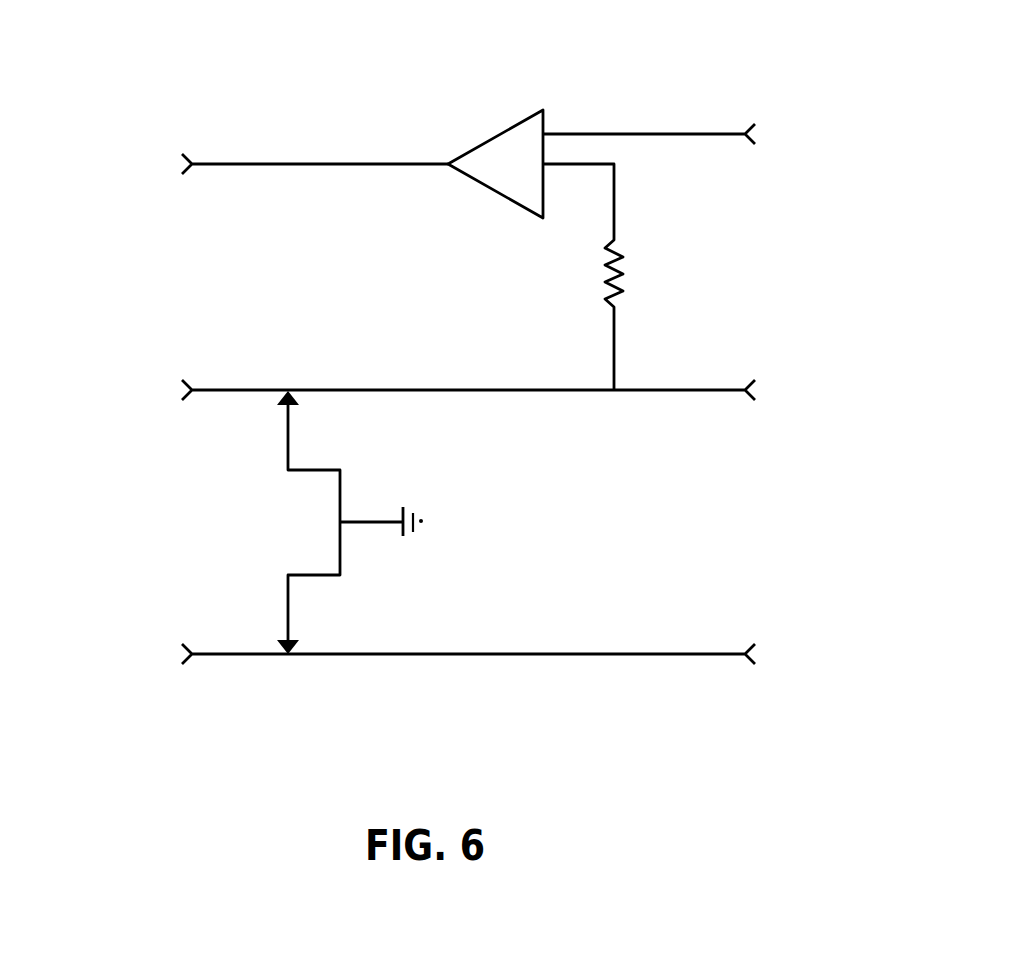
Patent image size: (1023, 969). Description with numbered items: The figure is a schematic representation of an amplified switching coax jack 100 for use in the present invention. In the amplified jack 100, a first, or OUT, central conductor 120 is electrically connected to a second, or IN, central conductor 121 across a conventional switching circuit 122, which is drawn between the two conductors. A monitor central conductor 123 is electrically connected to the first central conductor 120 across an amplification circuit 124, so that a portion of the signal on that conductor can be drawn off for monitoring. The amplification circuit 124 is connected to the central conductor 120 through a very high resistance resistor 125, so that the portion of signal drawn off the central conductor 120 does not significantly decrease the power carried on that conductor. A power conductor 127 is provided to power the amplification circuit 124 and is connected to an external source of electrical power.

The circuit 100 is at (850, 490).
The first line 120 is at (677, 391).
The second line 121 is at (588, 655).
The transistor 122 is at (313, 507).
The output line 123 is at (318, 163).
The inverter 124 is at (489, 137).
The resistor 125 is at (620, 285).
The input line 127 is at (670, 134).